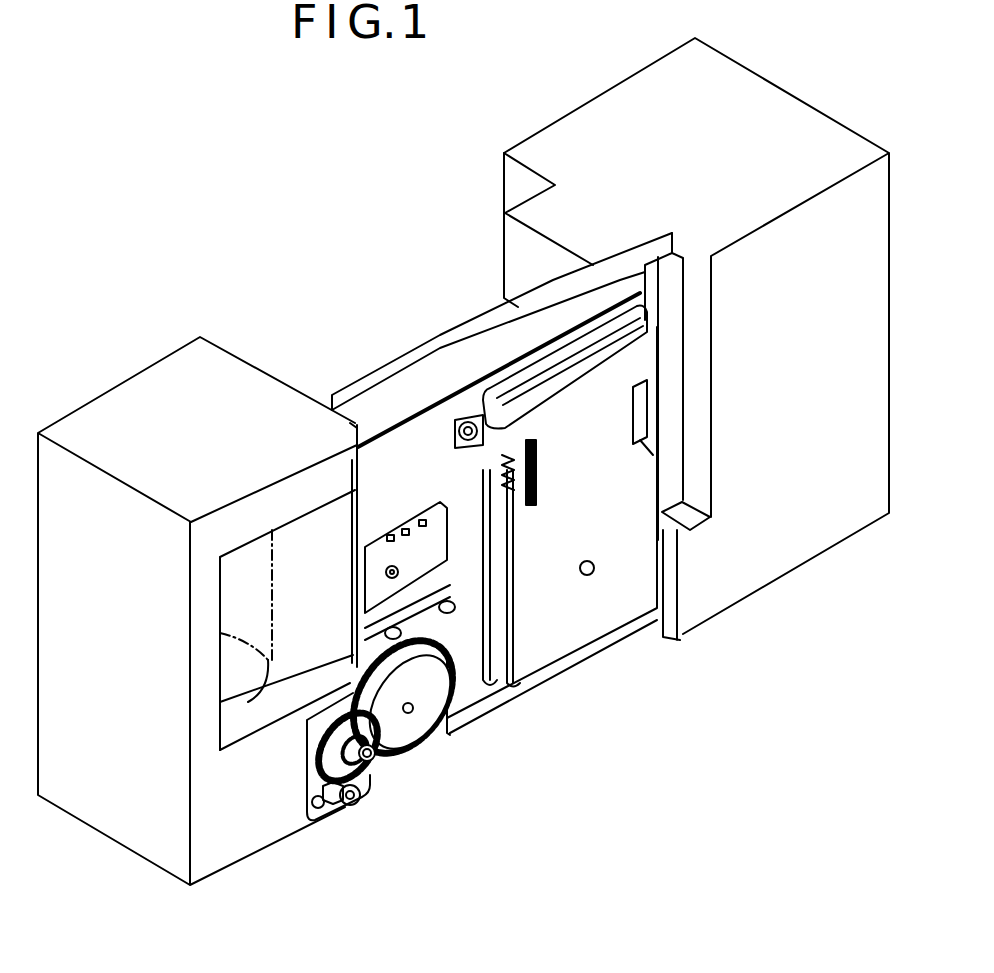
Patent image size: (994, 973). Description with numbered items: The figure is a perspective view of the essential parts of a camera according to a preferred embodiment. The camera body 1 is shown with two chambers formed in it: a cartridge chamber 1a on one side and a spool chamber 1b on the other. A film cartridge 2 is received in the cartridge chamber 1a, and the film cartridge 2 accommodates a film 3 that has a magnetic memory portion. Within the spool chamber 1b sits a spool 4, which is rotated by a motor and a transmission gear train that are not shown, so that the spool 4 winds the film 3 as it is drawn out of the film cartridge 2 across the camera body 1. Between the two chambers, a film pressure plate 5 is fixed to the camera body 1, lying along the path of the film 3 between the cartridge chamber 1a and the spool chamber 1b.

The camera body 1 is at (556, 140).
The cartridge chamber 1a is at (674, 268).
The spool chamber 1b is at (228, 718).
The film cartridge 2 is at (677, 320).
The film 3 is at (322, 510).
The spool 4 is at (231, 612).
The film pressure plate 5 is at (440, 425).